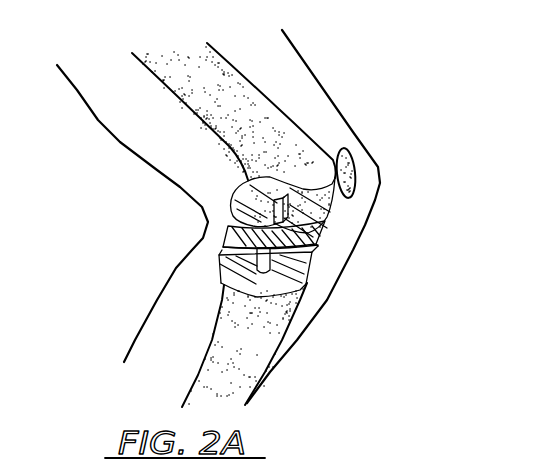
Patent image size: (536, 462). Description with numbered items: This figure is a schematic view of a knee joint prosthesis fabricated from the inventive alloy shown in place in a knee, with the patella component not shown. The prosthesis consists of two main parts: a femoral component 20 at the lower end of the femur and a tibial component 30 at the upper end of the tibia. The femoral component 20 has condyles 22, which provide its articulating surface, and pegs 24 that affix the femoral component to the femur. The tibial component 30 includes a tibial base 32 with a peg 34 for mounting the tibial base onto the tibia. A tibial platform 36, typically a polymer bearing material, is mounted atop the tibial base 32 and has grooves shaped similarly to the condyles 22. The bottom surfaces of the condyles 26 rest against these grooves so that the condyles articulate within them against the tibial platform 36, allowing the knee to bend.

The femoral component 20 is at (333, 207).
The condyles 22 is at (230, 206).
The pegs 24 is at (250, 184).
The bottom surfaces of the condyles 26 is at (322, 240).
The tibial component 30 is at (324, 258).
The tibial base 32 is at (230, 251).
The peg 34 is at (221, 282).
The tibial platform 36 is at (317, 250).